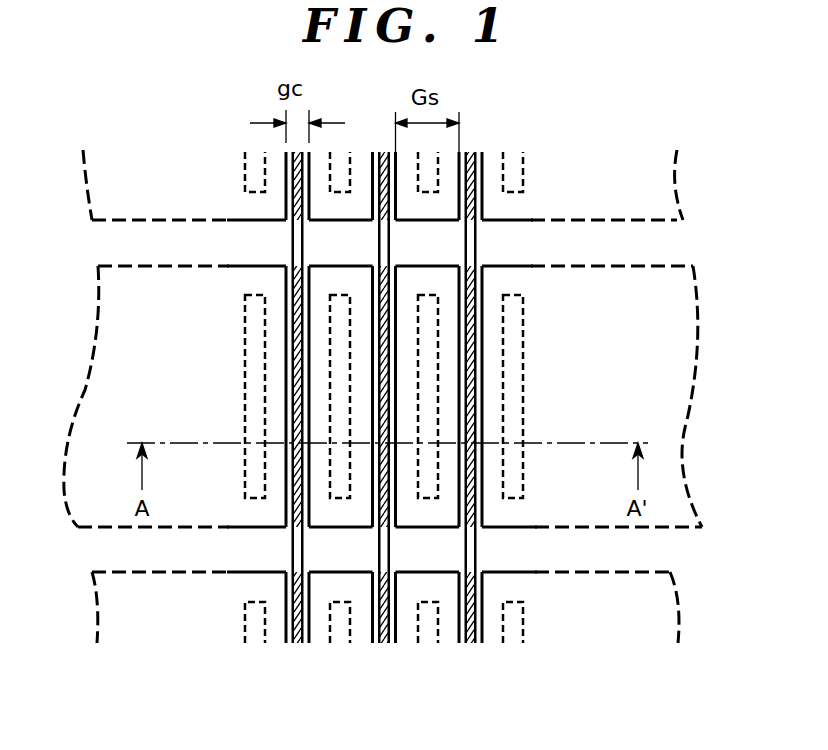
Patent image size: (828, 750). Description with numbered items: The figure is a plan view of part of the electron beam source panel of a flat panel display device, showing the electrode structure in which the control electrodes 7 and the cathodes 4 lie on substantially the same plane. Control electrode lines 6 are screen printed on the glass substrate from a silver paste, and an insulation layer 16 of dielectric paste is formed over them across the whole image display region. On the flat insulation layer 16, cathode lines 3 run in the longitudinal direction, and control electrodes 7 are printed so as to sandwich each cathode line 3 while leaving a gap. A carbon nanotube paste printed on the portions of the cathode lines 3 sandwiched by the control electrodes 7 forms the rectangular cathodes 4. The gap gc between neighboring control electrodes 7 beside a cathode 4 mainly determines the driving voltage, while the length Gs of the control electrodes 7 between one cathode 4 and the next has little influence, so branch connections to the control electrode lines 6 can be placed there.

The cathode line 3 is at (475, 550).
The cathode 4 is at (472, 350).
The control electrode line 6 is at (613, 267).
The control electrode 7 is at (275, 375).
The insulation layer 16 is at (272, 550).